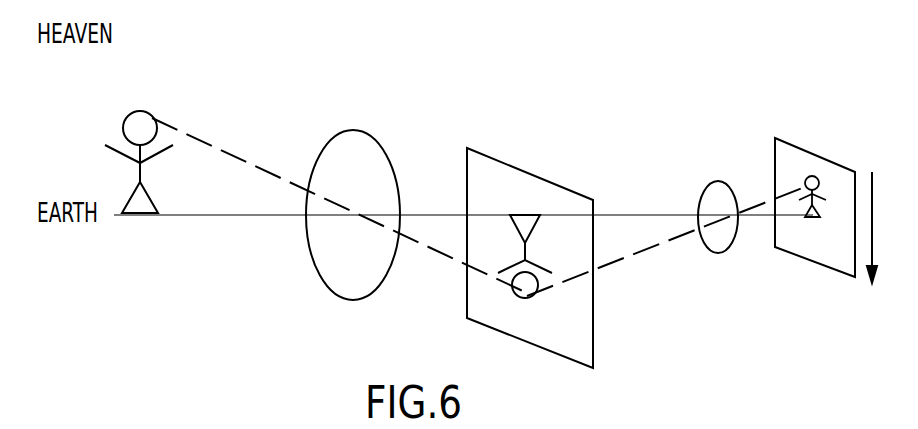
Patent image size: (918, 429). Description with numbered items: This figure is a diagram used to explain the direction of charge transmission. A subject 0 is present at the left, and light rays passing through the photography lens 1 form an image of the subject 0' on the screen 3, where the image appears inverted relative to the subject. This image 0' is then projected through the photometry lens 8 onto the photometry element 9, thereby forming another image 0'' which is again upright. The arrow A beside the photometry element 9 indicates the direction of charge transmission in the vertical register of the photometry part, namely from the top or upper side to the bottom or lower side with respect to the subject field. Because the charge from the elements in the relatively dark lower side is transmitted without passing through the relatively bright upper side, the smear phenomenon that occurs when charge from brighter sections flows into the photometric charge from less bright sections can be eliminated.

The subject 0 is at (139, 128).
The photography lens 1 is at (355, 130).
The screen 3 is at (535, 175).
The image of the subject 0' is at (523, 307).
The photometry lens 8 is at (705, 185).
The photometry element 9 is at (820, 262).
The another image 0'' is at (828, 158).
The arrow A is at (873, 205).